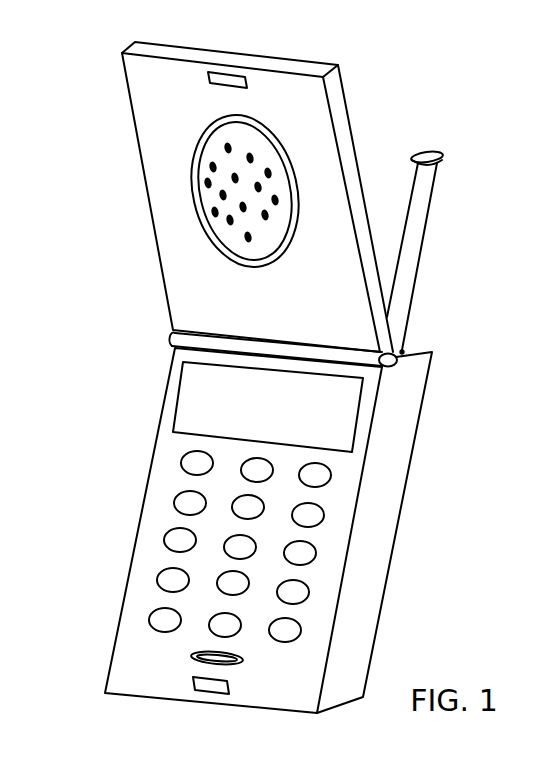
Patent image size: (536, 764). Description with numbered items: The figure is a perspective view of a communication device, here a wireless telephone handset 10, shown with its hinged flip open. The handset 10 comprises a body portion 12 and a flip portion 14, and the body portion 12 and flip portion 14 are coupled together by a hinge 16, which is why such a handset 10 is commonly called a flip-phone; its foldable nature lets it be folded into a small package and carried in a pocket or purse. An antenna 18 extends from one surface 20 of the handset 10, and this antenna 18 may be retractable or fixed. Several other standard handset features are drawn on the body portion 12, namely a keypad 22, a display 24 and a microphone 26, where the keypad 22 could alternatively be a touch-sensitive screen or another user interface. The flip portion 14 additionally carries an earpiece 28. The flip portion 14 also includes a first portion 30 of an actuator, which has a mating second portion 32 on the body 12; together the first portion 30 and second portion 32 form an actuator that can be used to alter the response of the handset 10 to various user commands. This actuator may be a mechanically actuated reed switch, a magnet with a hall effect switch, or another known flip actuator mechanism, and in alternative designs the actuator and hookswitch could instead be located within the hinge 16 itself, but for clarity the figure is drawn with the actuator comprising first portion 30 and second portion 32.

The wireless telephone handset 10 is at (96, 430).
The body portion 12 is at (390, 492).
The flip portion 14 is at (130, 95).
The hinge 16 is at (192, 335).
The antenna 18 is at (428, 230).
The surface 20 is at (415, 350).
The keypad 22 is at (200, 546).
The display 24 is at (200, 383).
The microphone 26 is at (190, 657).
The earpiece 28 is at (219, 183).
The first portion of an actuator 30 is at (228, 72).
The second portion of an actuator 32 is at (190, 688).